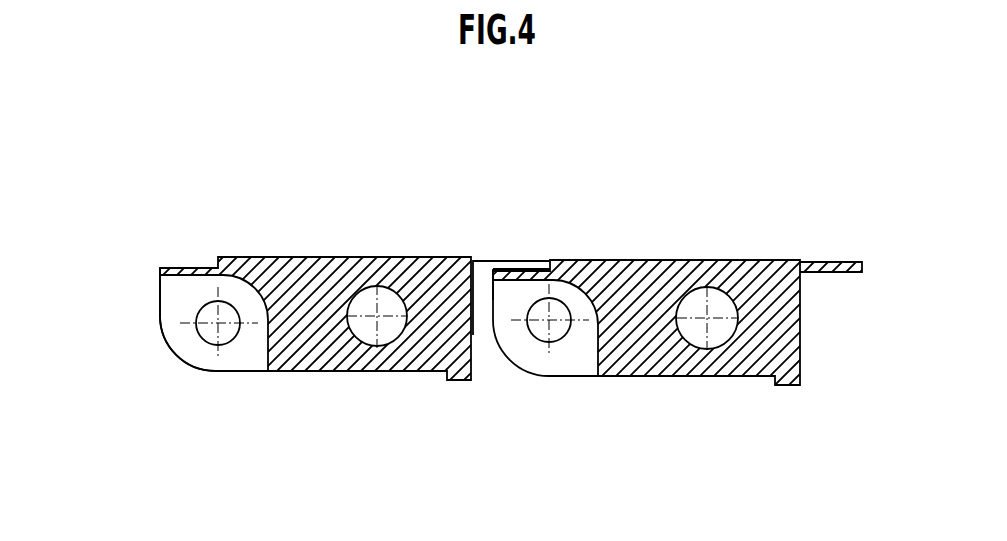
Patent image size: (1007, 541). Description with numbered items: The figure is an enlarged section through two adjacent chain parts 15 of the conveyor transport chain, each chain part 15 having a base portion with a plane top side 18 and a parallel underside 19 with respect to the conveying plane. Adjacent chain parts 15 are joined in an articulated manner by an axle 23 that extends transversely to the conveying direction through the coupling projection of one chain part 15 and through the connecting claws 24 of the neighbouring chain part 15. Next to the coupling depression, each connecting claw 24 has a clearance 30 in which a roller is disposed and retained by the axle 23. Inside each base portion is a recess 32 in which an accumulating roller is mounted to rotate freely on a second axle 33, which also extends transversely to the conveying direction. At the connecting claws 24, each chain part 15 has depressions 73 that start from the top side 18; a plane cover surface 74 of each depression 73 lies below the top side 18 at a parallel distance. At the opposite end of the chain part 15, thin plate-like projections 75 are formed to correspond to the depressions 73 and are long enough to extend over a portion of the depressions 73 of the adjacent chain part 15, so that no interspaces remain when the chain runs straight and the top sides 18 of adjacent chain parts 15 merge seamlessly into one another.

The chain part 15 is at (318, 373).
The top side 18 is at (343, 257).
The underside 19 is at (415, 373).
The axle 23 is at (208, 337).
The connecting claw 24 is at (182, 273).
The clearance 30 is at (253, 352).
The recess 32 is at (203, 355).
The axle 33 is at (388, 300).
The depression 73 is at (191, 266).
The cover surface 74 is at (175, 268).
The plate-like projection 75 is at (522, 260).